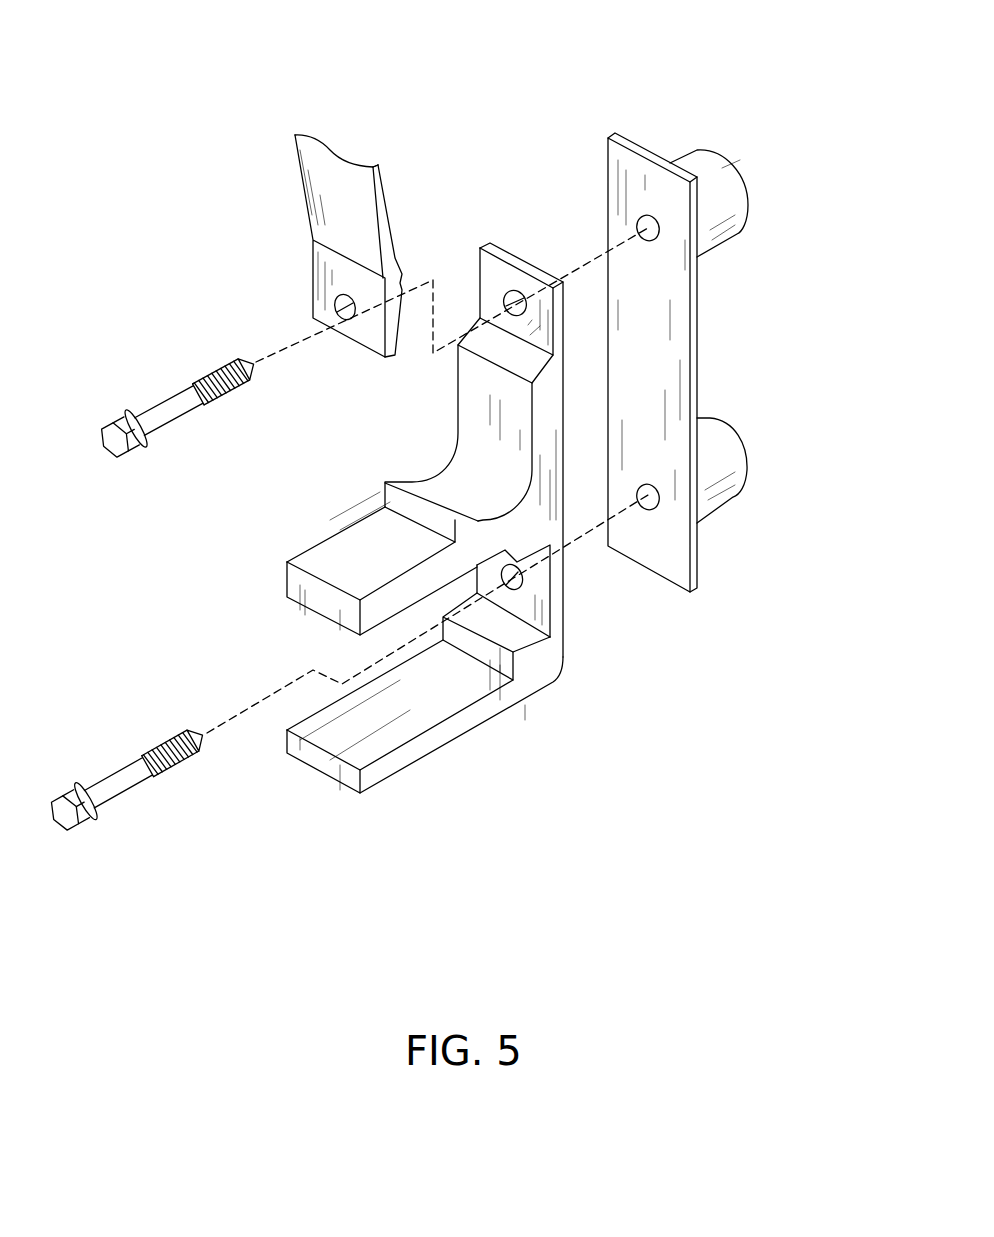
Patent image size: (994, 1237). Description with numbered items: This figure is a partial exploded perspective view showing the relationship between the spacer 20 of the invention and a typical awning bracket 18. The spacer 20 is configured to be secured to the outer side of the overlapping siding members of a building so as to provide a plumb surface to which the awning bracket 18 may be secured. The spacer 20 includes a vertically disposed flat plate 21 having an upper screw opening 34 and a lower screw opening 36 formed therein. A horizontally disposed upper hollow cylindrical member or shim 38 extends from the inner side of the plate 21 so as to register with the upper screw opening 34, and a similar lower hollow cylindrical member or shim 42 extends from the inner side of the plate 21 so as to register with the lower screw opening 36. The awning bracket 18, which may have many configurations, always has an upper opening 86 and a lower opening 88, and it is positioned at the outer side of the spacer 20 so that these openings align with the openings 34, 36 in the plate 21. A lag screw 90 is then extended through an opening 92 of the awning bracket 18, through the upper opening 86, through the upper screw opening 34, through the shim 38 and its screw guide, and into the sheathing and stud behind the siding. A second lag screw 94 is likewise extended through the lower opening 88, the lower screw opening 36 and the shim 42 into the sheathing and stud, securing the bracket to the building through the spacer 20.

The awning bracket 18 is at (475, 466).
The spacer 20 is at (668, 327).
The flat plate 21 is at (628, 185).
The upper screw opening 34 is at (652, 238).
The lower screw opening 36 is at (650, 510).
The upper hollow cylindrical member or shim 38 is at (733, 185).
The lower hollow cylindrical member or shim 42 is at (727, 465).
The upper opening 86 is at (509, 297).
The lower opening 88 is at (520, 577).
The lag screw 90 is at (213, 375).
The opening 92 is at (353, 317).
The lag screw 94 is at (160, 745).